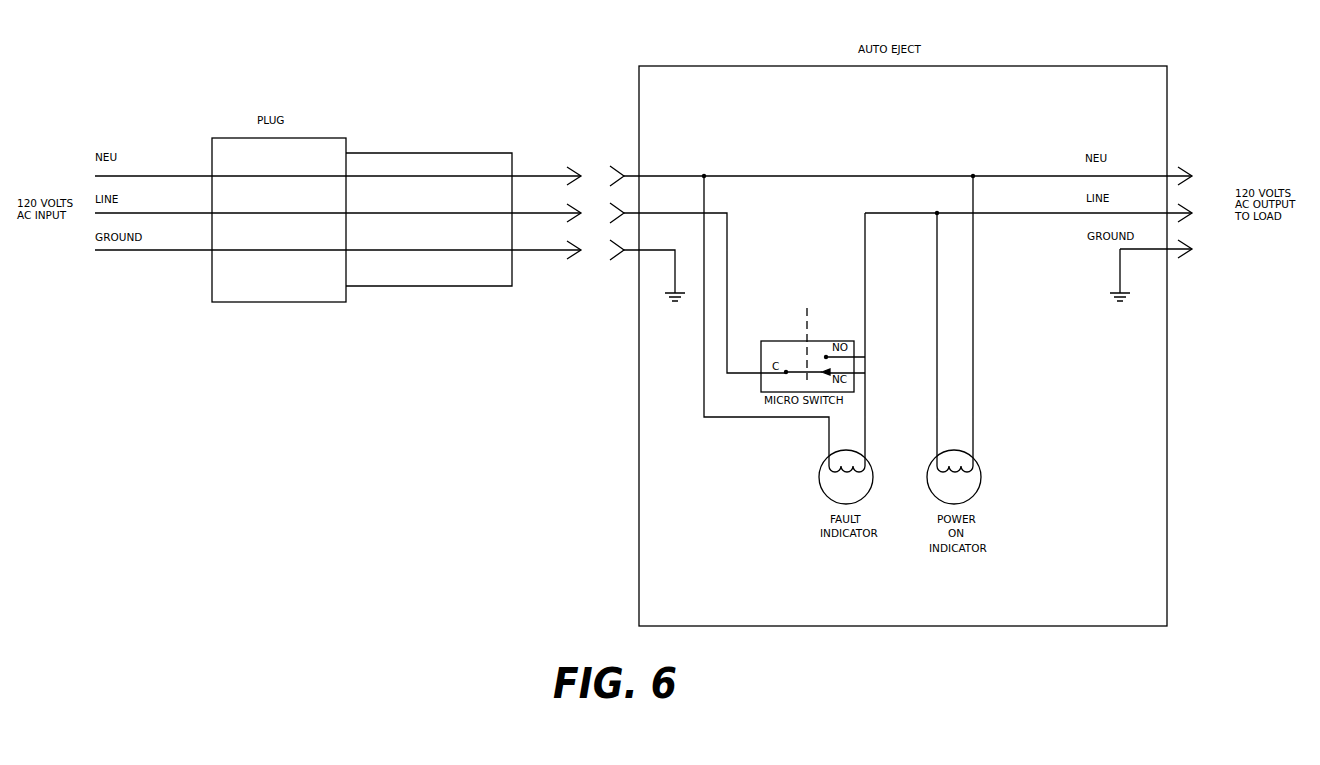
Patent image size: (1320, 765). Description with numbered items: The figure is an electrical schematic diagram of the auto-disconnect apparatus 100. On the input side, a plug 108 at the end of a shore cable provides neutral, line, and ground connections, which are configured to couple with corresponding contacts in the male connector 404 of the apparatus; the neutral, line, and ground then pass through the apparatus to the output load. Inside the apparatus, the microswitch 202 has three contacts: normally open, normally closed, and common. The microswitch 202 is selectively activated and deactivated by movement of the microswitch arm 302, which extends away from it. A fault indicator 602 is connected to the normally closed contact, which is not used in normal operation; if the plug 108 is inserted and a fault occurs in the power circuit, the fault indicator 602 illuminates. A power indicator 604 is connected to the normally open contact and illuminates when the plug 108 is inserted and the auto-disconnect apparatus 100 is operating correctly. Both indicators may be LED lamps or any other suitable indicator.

The auto-disconnect apparatus 100 is at (769, 65).
The plug 108 is at (290, 302).
The male connector 404 is at (614, 167).
The microswitch arm 302 is at (805, 330).
The microswitch 202 is at (759, 383).
The fault indicator 602 is at (818, 483).
The power indicator 604 is at (977, 474).